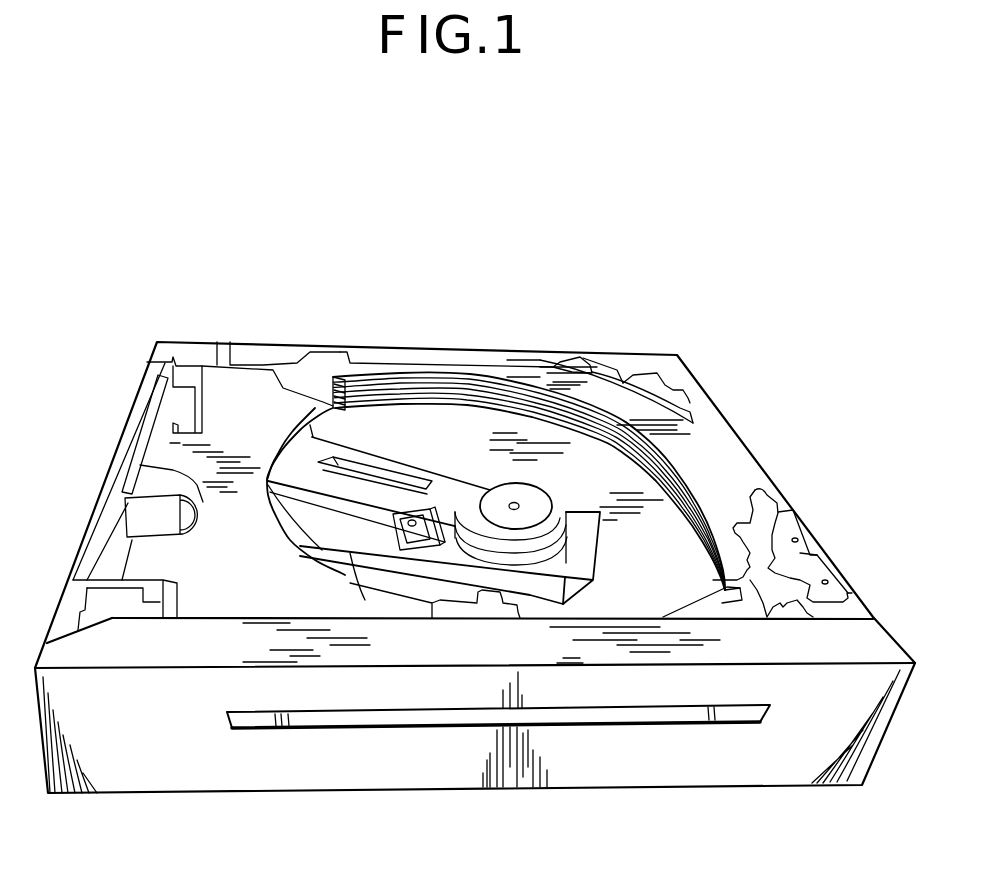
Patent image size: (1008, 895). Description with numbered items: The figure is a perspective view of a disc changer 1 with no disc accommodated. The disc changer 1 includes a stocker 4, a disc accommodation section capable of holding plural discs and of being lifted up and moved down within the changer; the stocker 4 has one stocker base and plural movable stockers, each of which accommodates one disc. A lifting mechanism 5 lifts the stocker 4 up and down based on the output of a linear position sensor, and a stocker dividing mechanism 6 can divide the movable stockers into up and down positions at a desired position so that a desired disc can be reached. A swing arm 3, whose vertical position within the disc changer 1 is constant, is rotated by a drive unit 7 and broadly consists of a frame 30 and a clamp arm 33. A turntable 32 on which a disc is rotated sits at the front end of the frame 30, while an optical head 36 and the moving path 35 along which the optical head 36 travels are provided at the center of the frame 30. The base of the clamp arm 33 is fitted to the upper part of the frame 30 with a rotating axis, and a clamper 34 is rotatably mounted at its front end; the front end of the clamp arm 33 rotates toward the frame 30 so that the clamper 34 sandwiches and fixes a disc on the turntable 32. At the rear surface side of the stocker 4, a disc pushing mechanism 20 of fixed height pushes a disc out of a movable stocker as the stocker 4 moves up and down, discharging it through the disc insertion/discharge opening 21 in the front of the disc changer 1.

The disc changer 1 is at (600, 270).
The swing arm 3 is at (467, 478).
The stocker 4 is at (690, 448).
The lifting mechanism 5 is at (670, 372).
The stocker dividing mechanism 6 is at (383, 362).
The drive unit 7 is at (247, 412).
The disc pushing mechanism 20 is at (565, 360).
The disc insertion/discharge opening 21 is at (455, 727).
The frame 30 is at (573, 552).
The turntable 32 is at (583, 580).
The clamp arm 33 is at (435, 478).
The clamper 34 is at (563, 513).
The moving path 35 is at (345, 510).
The optical head 36 is at (410, 525).